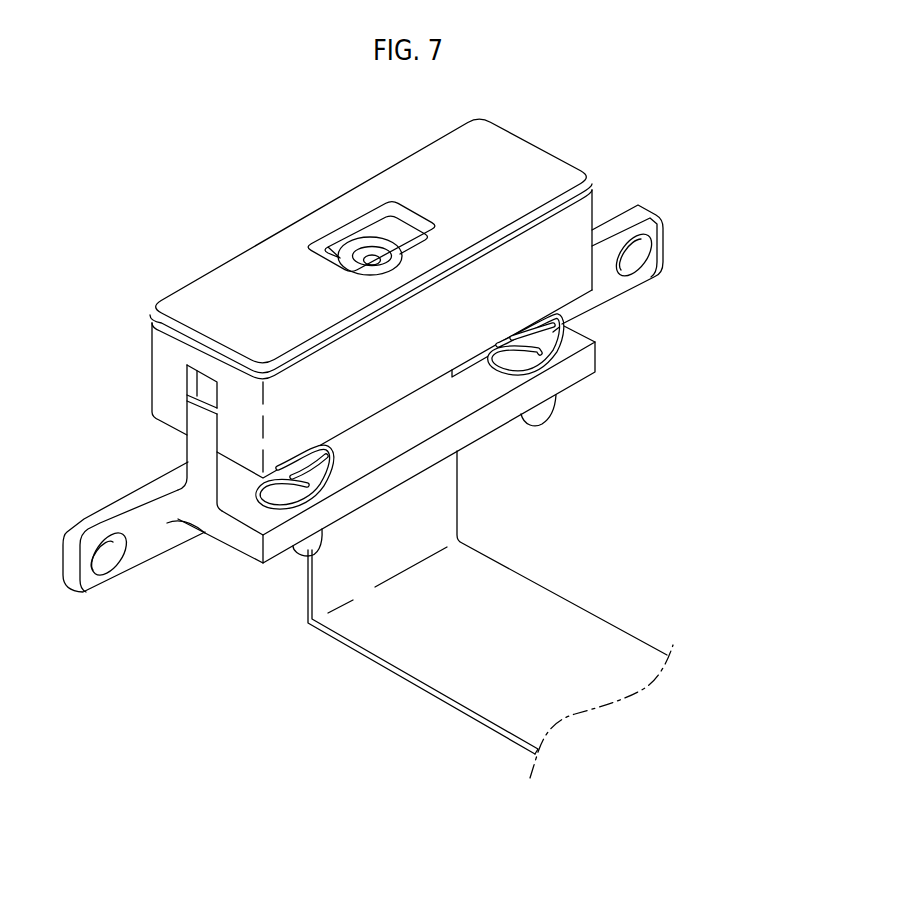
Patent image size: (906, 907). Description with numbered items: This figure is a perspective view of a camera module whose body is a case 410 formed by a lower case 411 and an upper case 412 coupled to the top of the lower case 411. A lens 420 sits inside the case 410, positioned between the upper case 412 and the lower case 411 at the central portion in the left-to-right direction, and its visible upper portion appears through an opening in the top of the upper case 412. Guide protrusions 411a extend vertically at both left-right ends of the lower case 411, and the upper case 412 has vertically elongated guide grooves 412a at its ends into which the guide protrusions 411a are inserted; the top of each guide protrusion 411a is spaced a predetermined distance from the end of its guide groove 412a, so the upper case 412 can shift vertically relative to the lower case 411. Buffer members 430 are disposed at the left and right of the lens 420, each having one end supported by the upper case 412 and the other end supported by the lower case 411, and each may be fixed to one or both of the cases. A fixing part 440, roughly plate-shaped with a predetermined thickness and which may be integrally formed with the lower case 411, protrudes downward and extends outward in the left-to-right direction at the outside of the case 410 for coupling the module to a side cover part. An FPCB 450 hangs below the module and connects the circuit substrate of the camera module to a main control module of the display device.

The case 410 is at (744, 307).
The lower case 411 is at (380, 444).
The guide protrusion 411a is at (198, 427).
The upper case 412 is at (384, 293).
The guide groove 412a is at (193, 378).
The lens 420 is at (372, 243).
The buffer member 430 is at (553, 368).
The fixing part 440 is at (137, 550).
The FPCB 450 is at (467, 670).